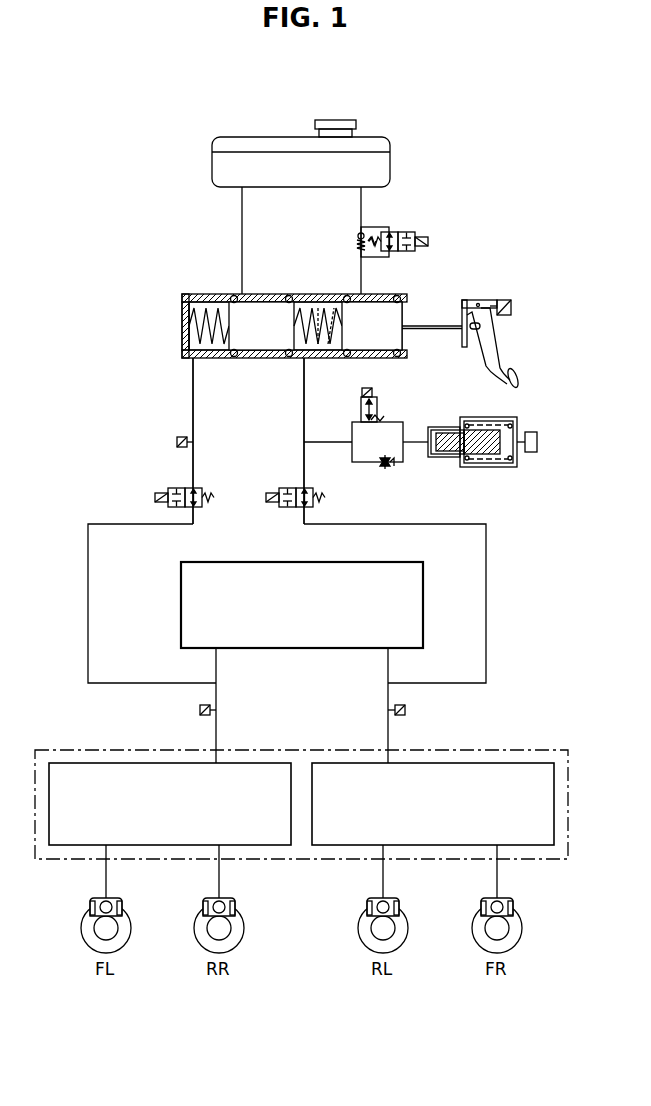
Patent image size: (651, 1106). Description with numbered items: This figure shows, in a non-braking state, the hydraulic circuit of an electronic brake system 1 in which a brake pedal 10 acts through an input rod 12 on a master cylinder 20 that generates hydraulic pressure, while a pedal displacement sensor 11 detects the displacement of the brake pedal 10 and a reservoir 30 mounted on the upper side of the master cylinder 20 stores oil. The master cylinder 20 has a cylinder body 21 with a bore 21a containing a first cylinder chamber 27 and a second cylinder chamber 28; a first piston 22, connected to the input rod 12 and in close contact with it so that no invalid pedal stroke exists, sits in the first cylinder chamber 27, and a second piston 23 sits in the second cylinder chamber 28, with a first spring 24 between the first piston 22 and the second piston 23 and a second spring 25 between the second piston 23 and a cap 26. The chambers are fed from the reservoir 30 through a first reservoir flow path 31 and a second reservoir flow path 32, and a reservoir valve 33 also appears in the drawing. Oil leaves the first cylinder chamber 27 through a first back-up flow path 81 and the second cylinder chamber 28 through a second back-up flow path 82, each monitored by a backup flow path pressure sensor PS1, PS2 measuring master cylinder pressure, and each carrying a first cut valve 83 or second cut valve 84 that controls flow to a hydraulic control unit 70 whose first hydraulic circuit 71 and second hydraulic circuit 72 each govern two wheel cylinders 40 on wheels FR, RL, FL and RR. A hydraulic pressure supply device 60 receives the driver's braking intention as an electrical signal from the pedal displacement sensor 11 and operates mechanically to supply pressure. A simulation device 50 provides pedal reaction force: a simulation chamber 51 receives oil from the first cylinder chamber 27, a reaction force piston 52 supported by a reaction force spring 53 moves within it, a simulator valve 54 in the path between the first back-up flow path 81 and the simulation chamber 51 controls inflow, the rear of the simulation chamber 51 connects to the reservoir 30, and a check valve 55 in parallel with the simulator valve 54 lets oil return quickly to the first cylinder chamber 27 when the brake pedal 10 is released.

The electronic brake system 1 is at (183, 101).
The brake pedal 10 is at (492, 331).
The pedal displacement sensor 11 is at (509, 300).
The input rod 12 is at (433, 325).
The master cylinder 20 is at (299, 385).
The cylinder body 21 is at (300, 296).
The bore 21a is at (328, 304).
The first piston 22 is at (404, 346).
The second piston 23 is at (278, 304).
The first spring 24 is at (336, 342).
The second spring 25 is at (200, 306).
The cap 26 is at (182, 314).
The first cylinder chamber 27 is at (320, 346).
The second cylinder chamber 28 is at (210, 346).
The reservoir 30 is at (238, 137).
The first reservoir flow path 31 is at (361, 216).
The second reservoir flow path 32 is at (242, 216).
The reservoir valve 33 is at (412, 232).
The wheel cylinders 40 is at (122, 907).
The simulation device 50 is at (491, 463).
The simulation chamber 51 is at (494, 468).
The reaction force piston 52 is at (447, 458).
The reaction force spring 53 is at (467, 466).
The simulator valve 54 is at (378, 399).
The check valve 55 is at (392, 466).
The hydraulic pressure supply device 60 is at (171, 572).
The hydraulic control unit 70 is at (301, 777).
The first hydraulic circuit 71 is at (458, 773).
The second hydraulic circuit 72 is at (104, 776).
The first back-up flow path 81 is at (304, 423).
The second back-up flow path 82 is at (193, 411).
The first cut valve 83 is at (327, 490).
The second cut valve 84 is at (217, 490).
The backup flow path pressure sensor PS1 is at (200, 709).
The backup flow path pressure sensor PS2 is at (405, 709).